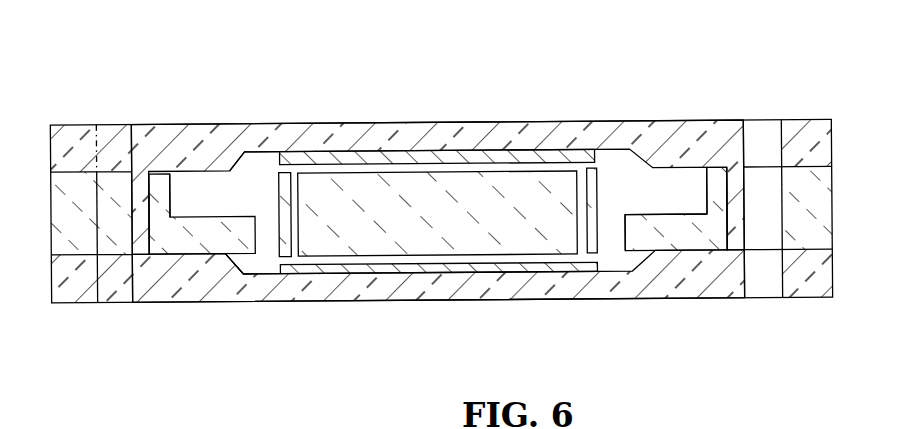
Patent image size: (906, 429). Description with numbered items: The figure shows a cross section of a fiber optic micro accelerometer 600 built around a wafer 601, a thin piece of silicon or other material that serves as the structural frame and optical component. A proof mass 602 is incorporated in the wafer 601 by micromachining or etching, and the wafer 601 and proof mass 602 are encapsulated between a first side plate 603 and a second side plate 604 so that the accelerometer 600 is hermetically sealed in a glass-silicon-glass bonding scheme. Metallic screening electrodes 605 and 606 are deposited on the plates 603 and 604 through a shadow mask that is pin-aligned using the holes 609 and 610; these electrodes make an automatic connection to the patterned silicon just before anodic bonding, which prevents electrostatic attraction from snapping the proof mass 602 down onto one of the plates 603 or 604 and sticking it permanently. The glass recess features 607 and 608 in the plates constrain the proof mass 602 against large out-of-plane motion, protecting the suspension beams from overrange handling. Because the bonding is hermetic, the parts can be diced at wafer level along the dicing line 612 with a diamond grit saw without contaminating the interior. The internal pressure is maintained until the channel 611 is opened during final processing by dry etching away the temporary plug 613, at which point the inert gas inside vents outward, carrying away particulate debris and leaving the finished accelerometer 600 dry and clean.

The fiber optic micro accelerometer 600 is at (298, 37).
The wafer 601 is at (158, 240).
The proof mass 602 is at (452, 222).
The first side plate 603 is at (512, 124).
The second side plate 604 is at (511, 300).
The metallic screening electrode 605 is at (357, 152).
The metallic screening electrode 606 is at (423, 272).
The glass recess feature 607 is at (257, 163).
The glass recess feature 608 is at (262, 264).
The hole 609 is at (108, 145).
The hole 610 is at (762, 138).
The channel 611 is at (226, 215).
The dicing line 612 is at (150, 199).
The temporary plug 613 is at (707, 200).